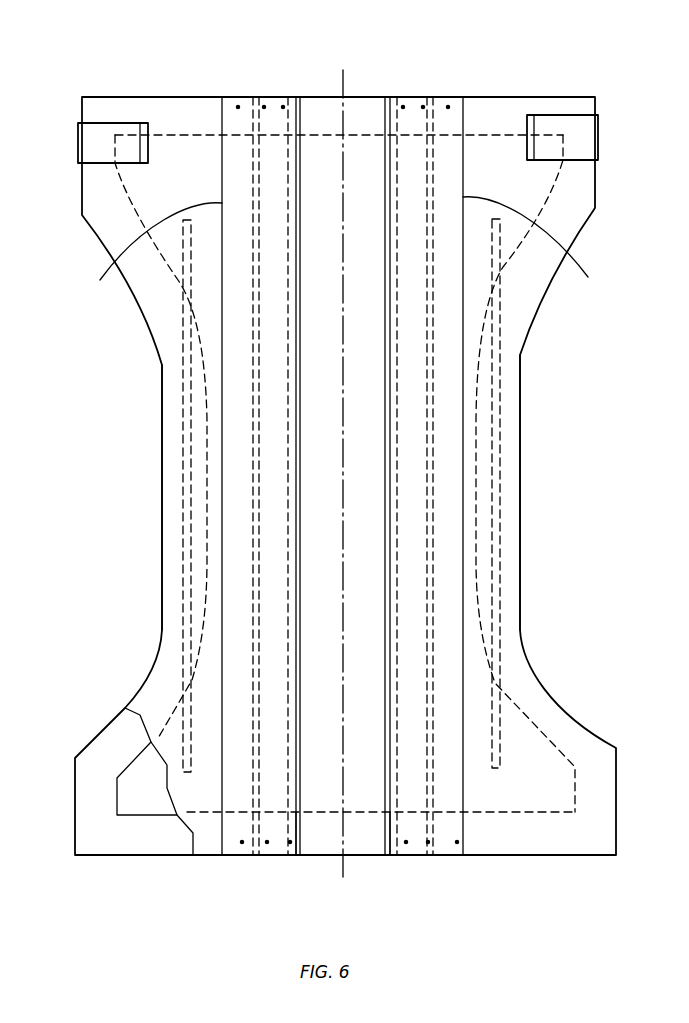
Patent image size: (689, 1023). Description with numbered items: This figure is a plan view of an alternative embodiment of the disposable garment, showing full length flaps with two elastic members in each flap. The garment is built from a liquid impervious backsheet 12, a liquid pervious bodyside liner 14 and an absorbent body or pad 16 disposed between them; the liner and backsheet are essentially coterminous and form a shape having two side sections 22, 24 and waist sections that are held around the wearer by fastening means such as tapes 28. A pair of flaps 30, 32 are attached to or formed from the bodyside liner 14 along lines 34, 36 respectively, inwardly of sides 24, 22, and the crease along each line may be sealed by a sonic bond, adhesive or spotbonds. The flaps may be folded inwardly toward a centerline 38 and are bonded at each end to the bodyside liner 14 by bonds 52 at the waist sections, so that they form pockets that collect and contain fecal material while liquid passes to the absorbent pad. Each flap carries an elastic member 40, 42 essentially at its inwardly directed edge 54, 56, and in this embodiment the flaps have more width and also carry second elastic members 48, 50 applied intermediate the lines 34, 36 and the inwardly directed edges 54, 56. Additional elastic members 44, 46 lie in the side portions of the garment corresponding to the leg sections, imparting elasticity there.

The backsheet 12 is at (88, 825).
The bodyside liner 14 is at (212, 845).
The absorbent body or pad 16 is at (143, 803).
The side section 22 is at (160, 388).
The side section 24 is at (520, 385).
The tapes 28 is at (80, 143).
The flap 30 is at (455, 122).
The flap 32 is at (233, 125).
The line 34 is at (538, 246).
The line 36 is at (149, 254).
The centerline 38 is at (343, 80).
The elastic member 40 is at (385, 125).
The elastic member 42 is at (300, 128).
The elastic member 44 is at (500, 463).
The elastic member 46 is at (182, 488).
The second elastic member 48 is at (435, 160).
The second elastic member 50 is at (253, 173).
The bonds 52 is at (283, 107).
The inwardly directed edge 54 is at (390, 795).
The inwardly directed edge 56 is at (307, 800).